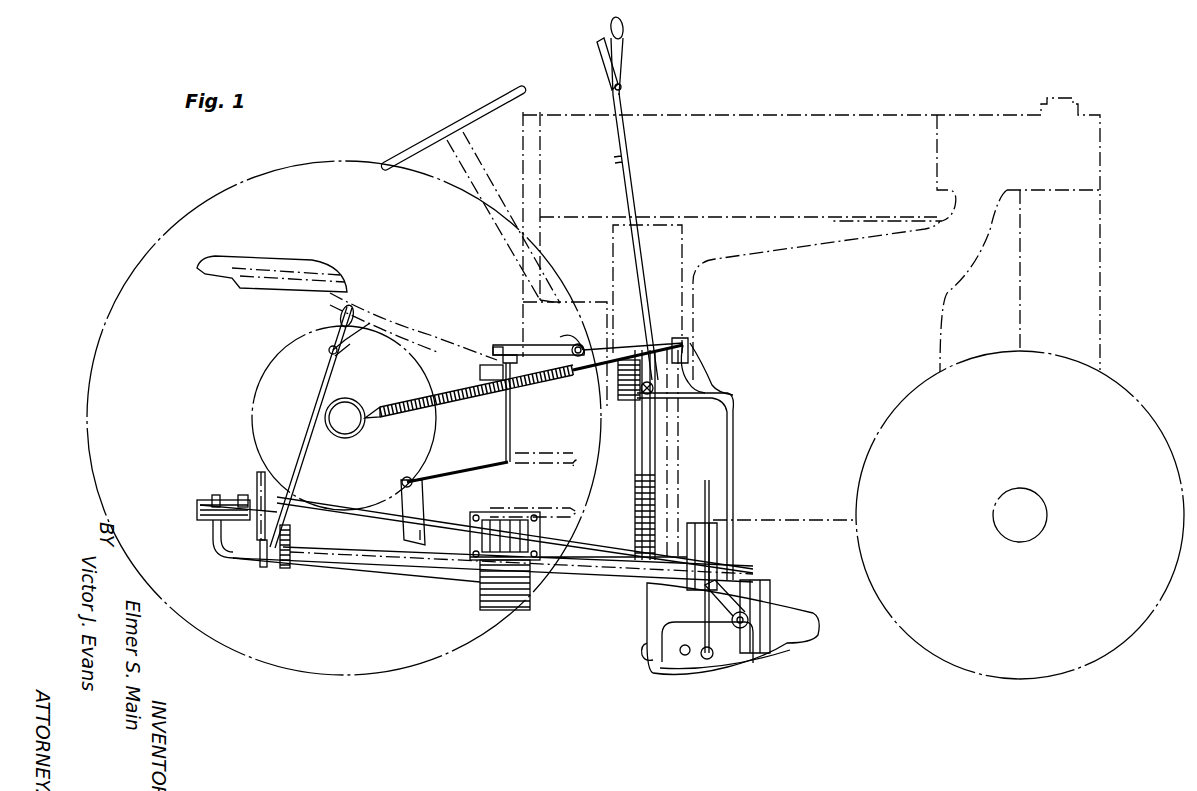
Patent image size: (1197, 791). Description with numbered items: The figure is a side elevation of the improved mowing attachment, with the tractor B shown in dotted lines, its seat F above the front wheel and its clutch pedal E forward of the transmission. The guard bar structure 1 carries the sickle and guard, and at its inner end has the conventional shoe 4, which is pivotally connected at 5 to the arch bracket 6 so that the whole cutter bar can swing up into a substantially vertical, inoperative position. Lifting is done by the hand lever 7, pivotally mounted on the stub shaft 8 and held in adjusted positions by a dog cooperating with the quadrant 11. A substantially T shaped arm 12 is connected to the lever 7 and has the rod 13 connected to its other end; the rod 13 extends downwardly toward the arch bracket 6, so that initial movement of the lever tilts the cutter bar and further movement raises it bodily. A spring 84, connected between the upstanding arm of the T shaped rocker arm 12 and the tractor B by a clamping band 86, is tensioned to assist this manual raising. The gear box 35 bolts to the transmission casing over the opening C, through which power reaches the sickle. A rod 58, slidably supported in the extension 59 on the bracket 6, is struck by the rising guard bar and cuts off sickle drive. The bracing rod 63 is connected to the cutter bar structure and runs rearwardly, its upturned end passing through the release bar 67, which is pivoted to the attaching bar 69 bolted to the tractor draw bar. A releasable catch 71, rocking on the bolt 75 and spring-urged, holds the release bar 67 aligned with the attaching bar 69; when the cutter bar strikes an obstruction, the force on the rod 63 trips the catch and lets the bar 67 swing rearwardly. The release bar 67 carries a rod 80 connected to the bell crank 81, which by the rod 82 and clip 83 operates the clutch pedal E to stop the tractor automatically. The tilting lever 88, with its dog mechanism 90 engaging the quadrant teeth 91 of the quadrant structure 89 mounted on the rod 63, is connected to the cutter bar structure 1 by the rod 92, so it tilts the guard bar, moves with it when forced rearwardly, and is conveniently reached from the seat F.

The guard bar structure 1 is at (717, 645).
The shoe 4 is at (750, 673).
The pivotal connection 5 is at (648, 648).
The arch bracket 6 is at (673, 627).
The hand lever 7 is at (636, 184).
The stub shaft 8 is at (647, 395).
The quadrant 11 is at (618, 392).
The T shaped arm 12 is at (700, 380).
The rod 13 is at (735, 465).
The gear box 35 is at (688, 345).
The rod 58 is at (703, 660).
The extension 59 is at (683, 656).
The bracing rod 63 is at (233, 560).
The release bar 67 is at (216, 495).
The attaching bar 69 is at (213, 530).
The releasable catch 71 is at (205, 500).
The bolt 75 is at (243, 495).
The rod 80 is at (375, 565).
The bell crank 81 is at (420, 497).
The rod 82 is at (512, 420).
The clip 83 is at (492, 347).
The spring 84 is at (445, 405).
The clamping band 86 is at (360, 432).
The tilting lever 88 is at (314, 405).
The quadrant structure 89 is at (290, 545).
The dog mechanism 90 is at (345, 348).
The quadrant teeth 91 is at (290, 500).
The rod 92 is at (563, 560).
The tractor B is at (845, 130).
The opening C is at (522, 549).
The clutch pedal E is at (538, 337).
The seat F is at (270, 270).